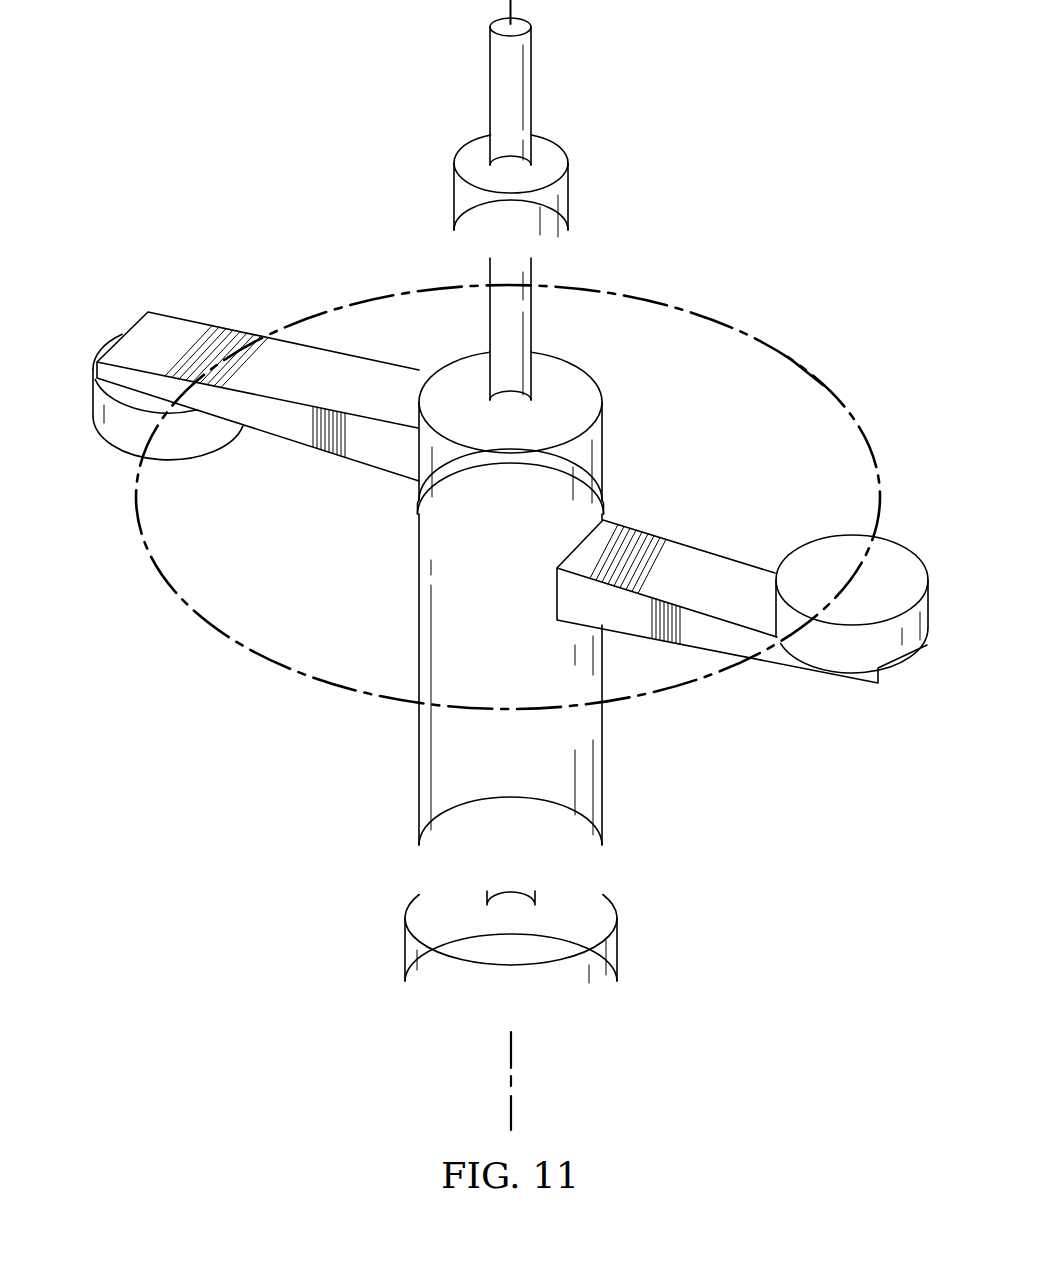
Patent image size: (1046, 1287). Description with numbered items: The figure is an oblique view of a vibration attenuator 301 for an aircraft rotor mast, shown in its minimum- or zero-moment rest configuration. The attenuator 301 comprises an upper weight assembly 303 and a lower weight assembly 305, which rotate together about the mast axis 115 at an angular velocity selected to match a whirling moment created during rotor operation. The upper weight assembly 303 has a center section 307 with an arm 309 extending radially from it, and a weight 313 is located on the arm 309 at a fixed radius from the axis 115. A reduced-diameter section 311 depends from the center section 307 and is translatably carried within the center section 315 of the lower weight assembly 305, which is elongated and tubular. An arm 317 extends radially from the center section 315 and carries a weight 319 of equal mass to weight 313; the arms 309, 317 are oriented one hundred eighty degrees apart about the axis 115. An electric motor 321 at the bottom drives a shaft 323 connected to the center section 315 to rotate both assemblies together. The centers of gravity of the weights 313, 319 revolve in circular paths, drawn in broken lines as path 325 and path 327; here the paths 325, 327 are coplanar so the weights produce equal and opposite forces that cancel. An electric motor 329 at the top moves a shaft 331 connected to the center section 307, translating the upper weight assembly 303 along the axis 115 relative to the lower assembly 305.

The mast axis 115 is at (508, 1113).
The attenuator 301 is at (750, 184).
The upper weight assembly 303 is at (605, 441).
The lower weight assembly 305 is at (419, 777).
The center section 307 is at (583, 383).
The arm 309 is at (168, 328).
The reduced-diameter section 311 is at (465, 545).
The weight 313 is at (103, 438).
The center section 315 is at (602, 767).
The arm 317 is at (722, 567).
The weight 319 is at (910, 563).
The electric motor 321 is at (615, 938).
The shaft 323 is at (495, 902).
The path 325 is at (725, 320).
The path 327 is at (807, 368).
The electric motor 329 is at (568, 182).
The shaft 331 is at (490, 72).